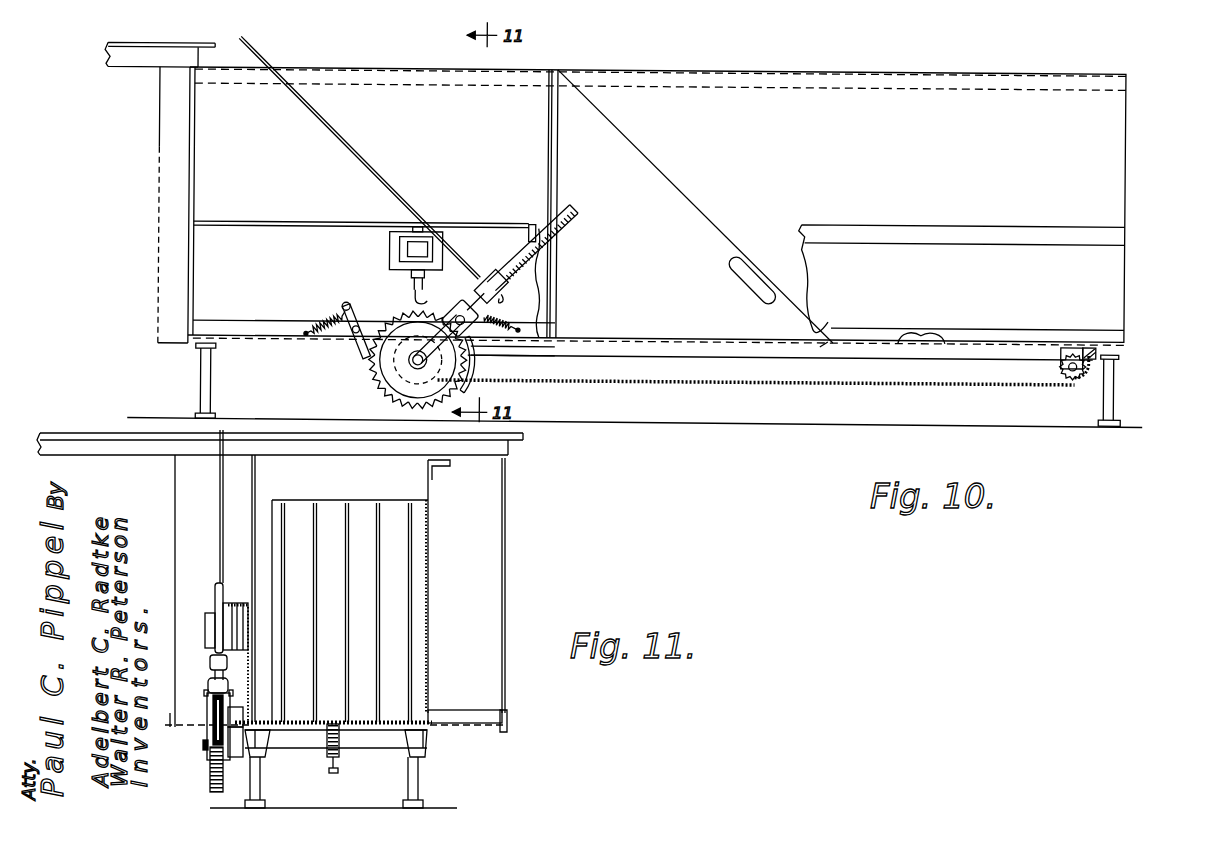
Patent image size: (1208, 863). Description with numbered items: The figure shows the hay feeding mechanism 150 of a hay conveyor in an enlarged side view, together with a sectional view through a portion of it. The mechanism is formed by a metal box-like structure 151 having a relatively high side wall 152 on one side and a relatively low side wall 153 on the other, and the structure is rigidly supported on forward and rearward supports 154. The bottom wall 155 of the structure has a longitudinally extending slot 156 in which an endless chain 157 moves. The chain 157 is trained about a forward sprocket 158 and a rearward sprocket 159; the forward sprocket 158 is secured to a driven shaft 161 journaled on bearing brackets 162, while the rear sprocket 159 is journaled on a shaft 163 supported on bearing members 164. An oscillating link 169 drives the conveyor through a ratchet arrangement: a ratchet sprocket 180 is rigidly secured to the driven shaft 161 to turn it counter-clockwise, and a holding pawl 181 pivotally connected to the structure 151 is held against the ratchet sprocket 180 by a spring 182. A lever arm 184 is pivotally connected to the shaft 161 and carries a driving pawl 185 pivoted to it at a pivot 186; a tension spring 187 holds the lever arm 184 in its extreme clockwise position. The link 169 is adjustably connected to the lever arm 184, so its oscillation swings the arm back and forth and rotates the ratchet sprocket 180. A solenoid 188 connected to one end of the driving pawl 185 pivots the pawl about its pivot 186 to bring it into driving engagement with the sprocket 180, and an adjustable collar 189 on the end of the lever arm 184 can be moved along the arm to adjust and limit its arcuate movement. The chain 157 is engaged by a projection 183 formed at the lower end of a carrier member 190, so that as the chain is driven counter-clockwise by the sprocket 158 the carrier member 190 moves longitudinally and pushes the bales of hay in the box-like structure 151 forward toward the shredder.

In FIG. 10, the hay feeding mechanism 150 is at (853, 429).
In FIG. 10, the box-like structure 151 is at (1127, 204).
In FIG. 10, the high side wall 152 is at (1130, 96).
In FIG. 10, the low side wall 153 is at (1117, 272).
In FIG. 10, the supports 154 is at (204, 378).
In FIG. 11, the supports 154 is at (259, 784).
In FIG. 10, the bottom wall 155 is at (930, 333).
In FIG. 11, the bottom wall 155 is at (381, 720).
In FIG. 11, the slot 156 is at (333, 724).
In FIG. 10, the endless chain 157 is at (952, 382).
In FIG. 11, the endless chain 157 is at (340, 762).
In FIG. 10, the forward sprocket 158 is at (396, 366).
In FIG. 11, the forward sprocket 158 is at (335, 774).
In FIG. 10, the rearward sprocket 159 is at (1077, 384).
In FIG. 10, the driven shaft 161 is at (402, 386).
In FIG. 11, the driven shaft 161 is at (395, 745).
In FIG. 11, the bearing brackets 162 is at (255, 746).
In FIG. 10, the shaft 163 is at (1099, 362).
In FIG. 10, the bearing members 164 is at (1076, 348).
In FIG. 10, the link 169 is at (355, 149).
In FIG. 11, the link 169 is at (219, 479).
In FIG. 10, the ratchet sprocket 180 is at (472, 382).
In FIG. 11, the ratchet sprocket 180 is at (212, 771).
In FIG. 10, the holding pawl 181 is at (360, 346).
In FIG. 10, the spring 182 is at (330, 312).
In FIG. 10, the projection 183 is at (828, 343).
In FIG. 10, the lever arm 184 is at (580, 214).
In FIG. 11, the lever arm 184 is at (216, 600).
In FIG. 10, the driving pawl 185 is at (492, 352).
In FIG. 11, the driving pawl 185 is at (205, 729).
In FIG. 10, the pivot 186 is at (453, 312).
In FIG. 10, the tension spring 187 is at (522, 323).
In FIG. 10, the solenoid 188 is at (422, 238).
In FIG. 11, the solenoid 188 is at (206, 622).
In FIG. 10, the adjustable collar 189 is at (491, 276).
In FIG. 10, the carrier member 190 is at (680, 192).